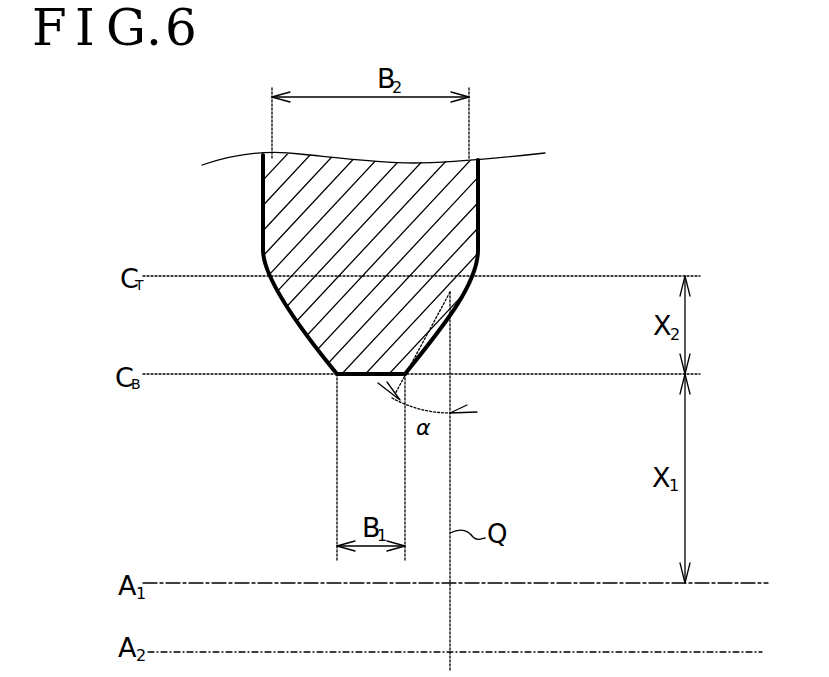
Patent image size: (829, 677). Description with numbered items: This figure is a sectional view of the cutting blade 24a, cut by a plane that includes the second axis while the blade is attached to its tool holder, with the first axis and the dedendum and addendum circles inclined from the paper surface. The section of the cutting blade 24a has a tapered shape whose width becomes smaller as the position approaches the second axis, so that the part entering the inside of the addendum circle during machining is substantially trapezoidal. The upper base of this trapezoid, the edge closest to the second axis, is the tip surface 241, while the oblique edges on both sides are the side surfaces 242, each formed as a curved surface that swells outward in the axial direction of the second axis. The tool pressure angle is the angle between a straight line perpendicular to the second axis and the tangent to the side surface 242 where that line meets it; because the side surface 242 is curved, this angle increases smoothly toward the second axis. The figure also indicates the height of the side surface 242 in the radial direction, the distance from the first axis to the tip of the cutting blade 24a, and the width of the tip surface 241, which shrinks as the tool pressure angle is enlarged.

The cutting blade 24a is at (262, 212).
The side surface 242 is at (292, 325).
The tip surface 241 is at (361, 377).